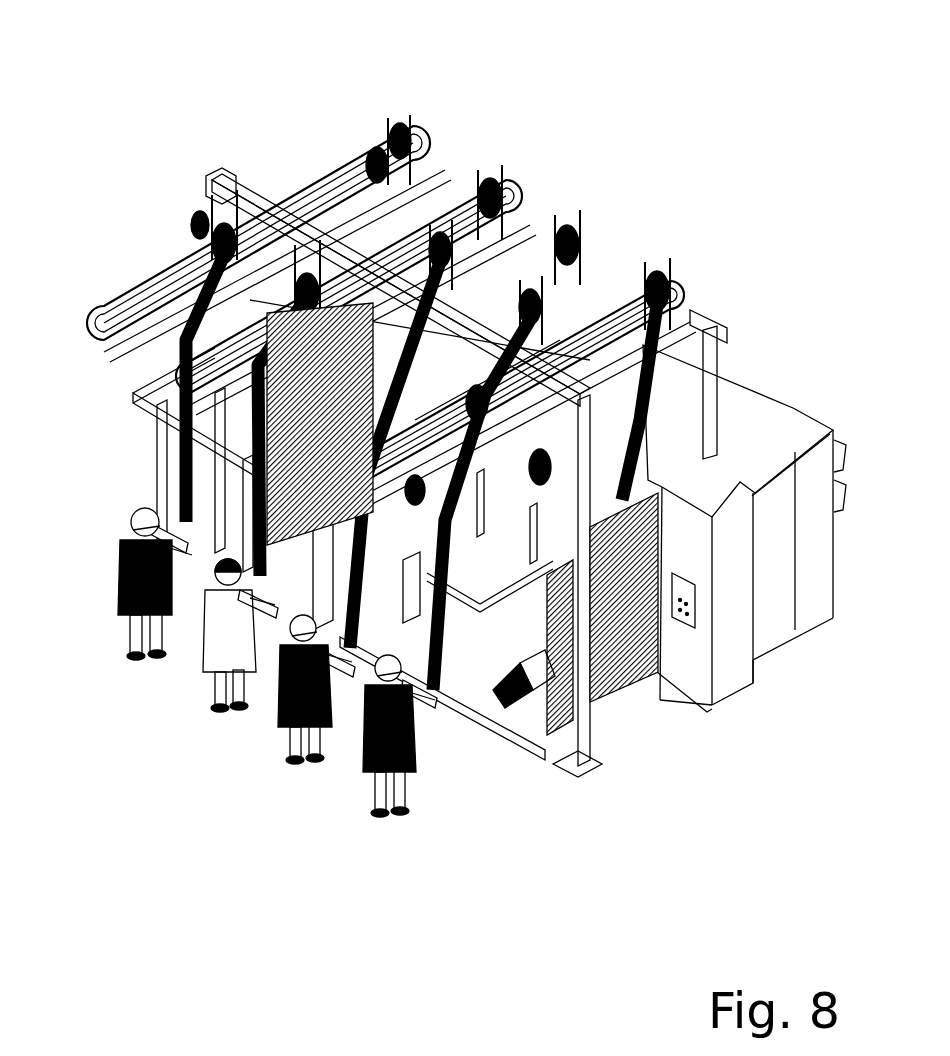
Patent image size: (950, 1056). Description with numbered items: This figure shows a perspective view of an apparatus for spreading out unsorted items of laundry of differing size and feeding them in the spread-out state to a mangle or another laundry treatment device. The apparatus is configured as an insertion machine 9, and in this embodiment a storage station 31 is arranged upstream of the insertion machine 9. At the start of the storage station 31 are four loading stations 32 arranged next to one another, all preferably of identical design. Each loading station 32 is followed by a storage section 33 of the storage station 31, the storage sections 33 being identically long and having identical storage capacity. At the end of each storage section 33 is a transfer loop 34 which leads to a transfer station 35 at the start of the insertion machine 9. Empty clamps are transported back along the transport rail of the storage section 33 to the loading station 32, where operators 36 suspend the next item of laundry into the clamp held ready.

The insertion machine 9 is at (732, 722).
The storage station 31 is at (343, 124).
The loading station 32 is at (128, 485).
The storage section 33 is at (448, 128).
The transfer loop 34 is at (320, 226).
The transfer station 35 is at (544, 494).
The operator 36 is at (166, 618).